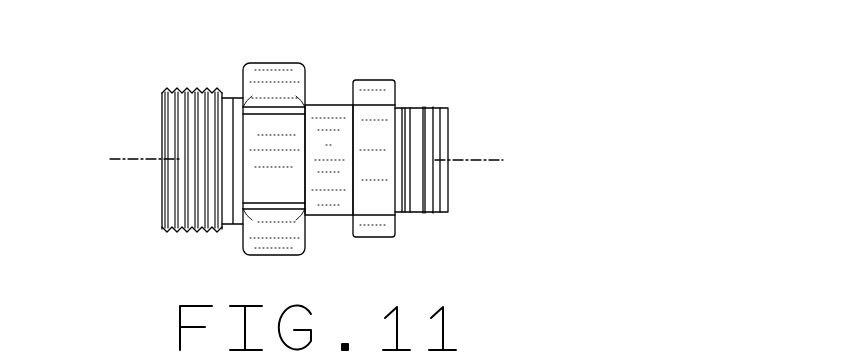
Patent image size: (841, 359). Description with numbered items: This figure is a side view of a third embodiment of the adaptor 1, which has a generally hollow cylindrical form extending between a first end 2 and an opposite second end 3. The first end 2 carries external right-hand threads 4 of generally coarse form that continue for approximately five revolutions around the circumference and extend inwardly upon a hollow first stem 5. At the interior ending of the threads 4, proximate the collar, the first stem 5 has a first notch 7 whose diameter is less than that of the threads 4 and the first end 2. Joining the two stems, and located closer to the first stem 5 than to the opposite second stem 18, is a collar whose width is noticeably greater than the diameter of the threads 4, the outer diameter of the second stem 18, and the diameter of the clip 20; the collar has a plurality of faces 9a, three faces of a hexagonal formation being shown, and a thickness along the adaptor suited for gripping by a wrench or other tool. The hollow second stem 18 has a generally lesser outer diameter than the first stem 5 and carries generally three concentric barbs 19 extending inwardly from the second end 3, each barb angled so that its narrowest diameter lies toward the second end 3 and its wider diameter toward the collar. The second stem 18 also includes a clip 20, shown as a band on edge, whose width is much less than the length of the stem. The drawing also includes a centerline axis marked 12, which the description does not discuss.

The adaptor 1 is at (134, 72).
The first end 2 is at (161, 126).
The second end 3 is at (450, 138).
The threads 4 is at (196, 82).
The first stem 5 is at (197, 240).
The first notch 7 is at (233, 96).
The faces 9a is at (273, 152).
The longitudinal axis 12 is at (110, 159).
The second stem 18 is at (333, 205).
The barbs 19 is at (410, 213).
The clip 20 is at (378, 80).